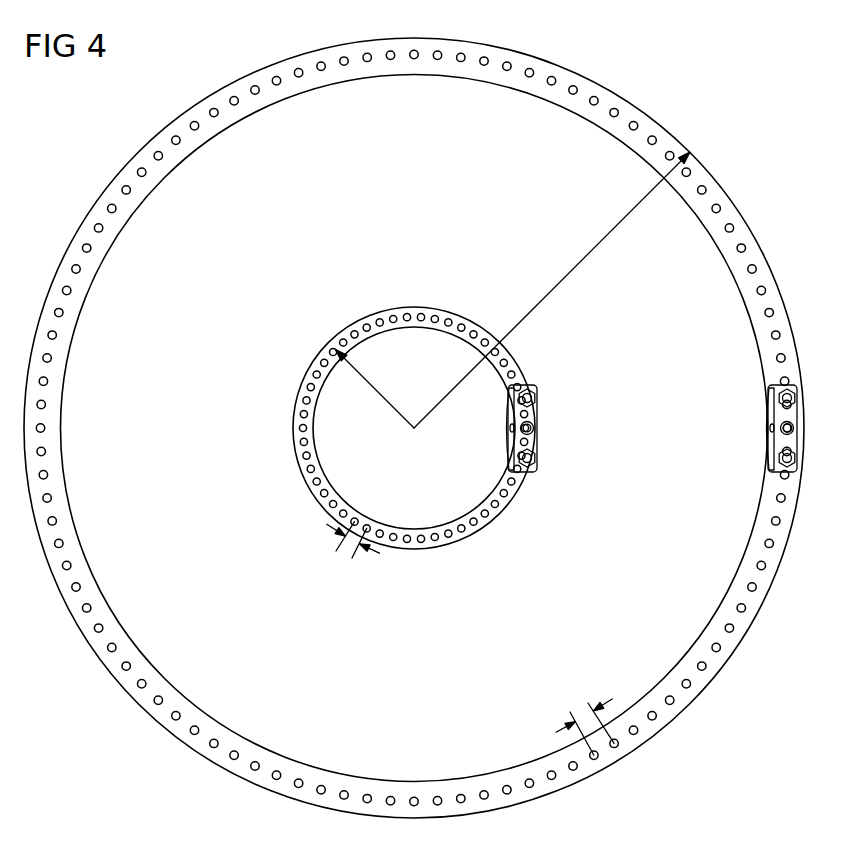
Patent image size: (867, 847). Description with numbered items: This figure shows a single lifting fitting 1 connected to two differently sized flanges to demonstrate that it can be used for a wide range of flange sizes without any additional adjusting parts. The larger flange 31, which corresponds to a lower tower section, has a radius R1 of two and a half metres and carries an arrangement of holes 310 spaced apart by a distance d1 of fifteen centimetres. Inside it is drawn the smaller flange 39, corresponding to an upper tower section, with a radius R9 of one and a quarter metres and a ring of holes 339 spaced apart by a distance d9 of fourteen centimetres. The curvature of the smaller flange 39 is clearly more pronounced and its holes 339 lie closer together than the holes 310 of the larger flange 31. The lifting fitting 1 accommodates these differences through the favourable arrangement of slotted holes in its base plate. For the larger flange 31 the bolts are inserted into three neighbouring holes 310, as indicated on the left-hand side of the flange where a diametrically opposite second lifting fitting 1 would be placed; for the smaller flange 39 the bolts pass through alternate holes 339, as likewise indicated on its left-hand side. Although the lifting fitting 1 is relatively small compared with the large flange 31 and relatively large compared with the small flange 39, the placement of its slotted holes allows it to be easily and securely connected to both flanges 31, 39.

The connecting element 1 is at (508, 428).
The larger flange 31 is at (651, 128).
The holes 310 is at (46, 475).
The smaller flange 39 is at (445, 308).
The bolt holes of inner ring 339 is at (299, 457).
The radius of the larger flange R1 is at (575, 270).
The radius of the smaller flange R9 is at (377, 392).
The distance between holes of the larger flange d1 is at (582, 714).
The distance between holes of the smaller flange d9 is at (342, 556).